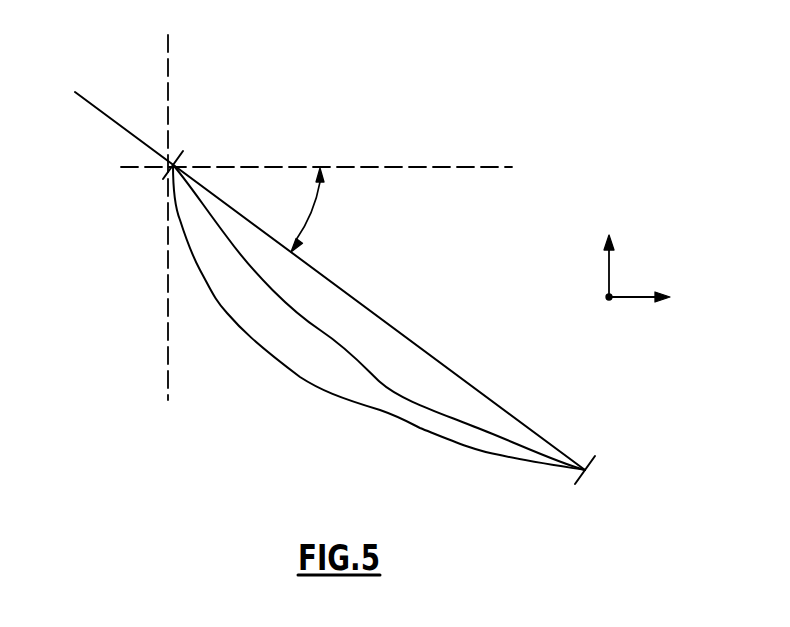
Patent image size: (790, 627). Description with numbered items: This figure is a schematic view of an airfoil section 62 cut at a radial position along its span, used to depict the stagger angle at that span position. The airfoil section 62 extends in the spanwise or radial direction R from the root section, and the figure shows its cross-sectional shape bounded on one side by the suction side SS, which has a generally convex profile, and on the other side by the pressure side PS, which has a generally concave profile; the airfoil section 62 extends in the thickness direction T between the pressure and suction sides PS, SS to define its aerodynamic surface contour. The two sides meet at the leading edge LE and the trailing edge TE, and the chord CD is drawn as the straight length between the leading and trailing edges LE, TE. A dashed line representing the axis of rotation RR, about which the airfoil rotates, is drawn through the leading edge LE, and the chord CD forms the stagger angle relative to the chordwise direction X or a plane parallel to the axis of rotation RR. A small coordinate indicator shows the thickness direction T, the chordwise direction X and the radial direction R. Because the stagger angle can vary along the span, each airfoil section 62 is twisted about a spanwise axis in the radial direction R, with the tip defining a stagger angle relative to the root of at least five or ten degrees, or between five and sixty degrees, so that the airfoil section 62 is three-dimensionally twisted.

The airfoil section 62 is at (379, 317).
The leading edge LE is at (173, 164).
The trailing edge TE is at (585, 470).
The chord CD is at (348, 293).
The pressure side PS is at (341, 355).
The suction side SS is at (335, 397).
The axis of rotation RR is at (483, 167).
The thickness direction T is at (608, 250).
The chordwise direction X is at (648, 299).
The radial direction R is at (608, 300).